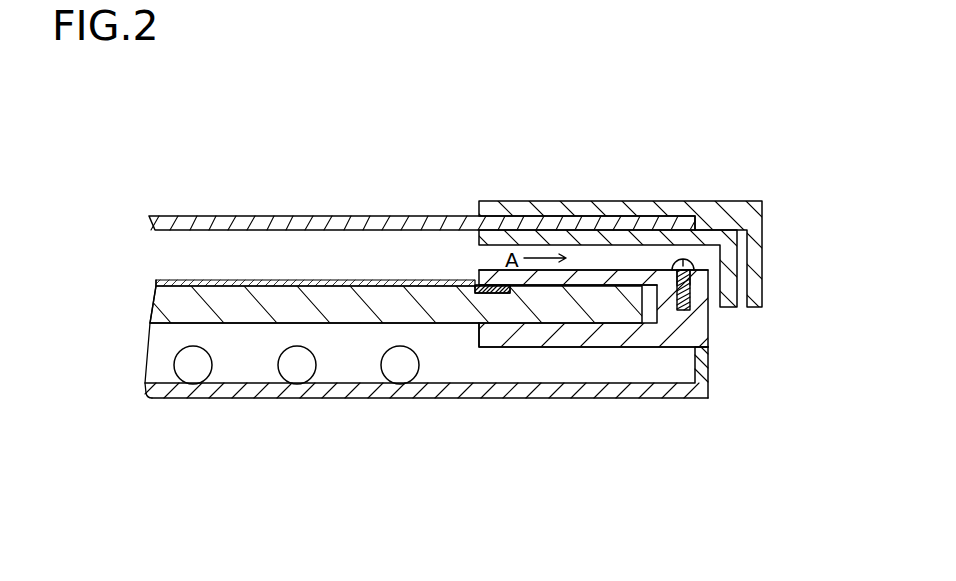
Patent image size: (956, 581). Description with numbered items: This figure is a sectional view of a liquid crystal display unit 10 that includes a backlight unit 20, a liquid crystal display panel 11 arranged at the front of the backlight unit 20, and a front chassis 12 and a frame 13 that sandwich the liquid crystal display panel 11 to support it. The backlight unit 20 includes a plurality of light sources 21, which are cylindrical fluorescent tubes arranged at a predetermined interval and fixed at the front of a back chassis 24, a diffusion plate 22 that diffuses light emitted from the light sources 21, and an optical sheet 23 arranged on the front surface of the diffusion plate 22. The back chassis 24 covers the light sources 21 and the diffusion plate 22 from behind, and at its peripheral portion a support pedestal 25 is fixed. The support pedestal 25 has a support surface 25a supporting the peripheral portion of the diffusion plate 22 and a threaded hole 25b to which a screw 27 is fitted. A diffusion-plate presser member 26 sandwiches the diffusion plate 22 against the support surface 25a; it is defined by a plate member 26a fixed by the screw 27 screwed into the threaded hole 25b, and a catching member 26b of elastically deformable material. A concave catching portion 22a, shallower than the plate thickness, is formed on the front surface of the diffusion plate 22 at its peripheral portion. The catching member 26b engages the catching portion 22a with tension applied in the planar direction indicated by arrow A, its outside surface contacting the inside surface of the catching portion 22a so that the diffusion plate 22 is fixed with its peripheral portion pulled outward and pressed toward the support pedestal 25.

The liquid crystal display unit 10 is at (212, 125).
The liquid crystal display panel 11 is at (331, 215).
The front chassis 12 is at (591, 201).
The frame 13 is at (523, 229).
The backlight unit 20 is at (98, 343).
The light sources 21 is at (193, 368).
The diffusion plate 22 is at (162, 312).
The catching portion 22a is at (472, 287).
The optical sheet 23 is at (155, 281).
The back chassis 24 is at (605, 390).
The support pedestal 25 is at (685, 333).
The support surface 25a is at (591, 322).
The threaded hole 25b is at (688, 307).
The diffusion-plate presser member 26 is at (495, 278).
The plate member 26a is at (591, 278).
The catching member 26b is at (482, 287).
The screw 27 is at (694, 263).